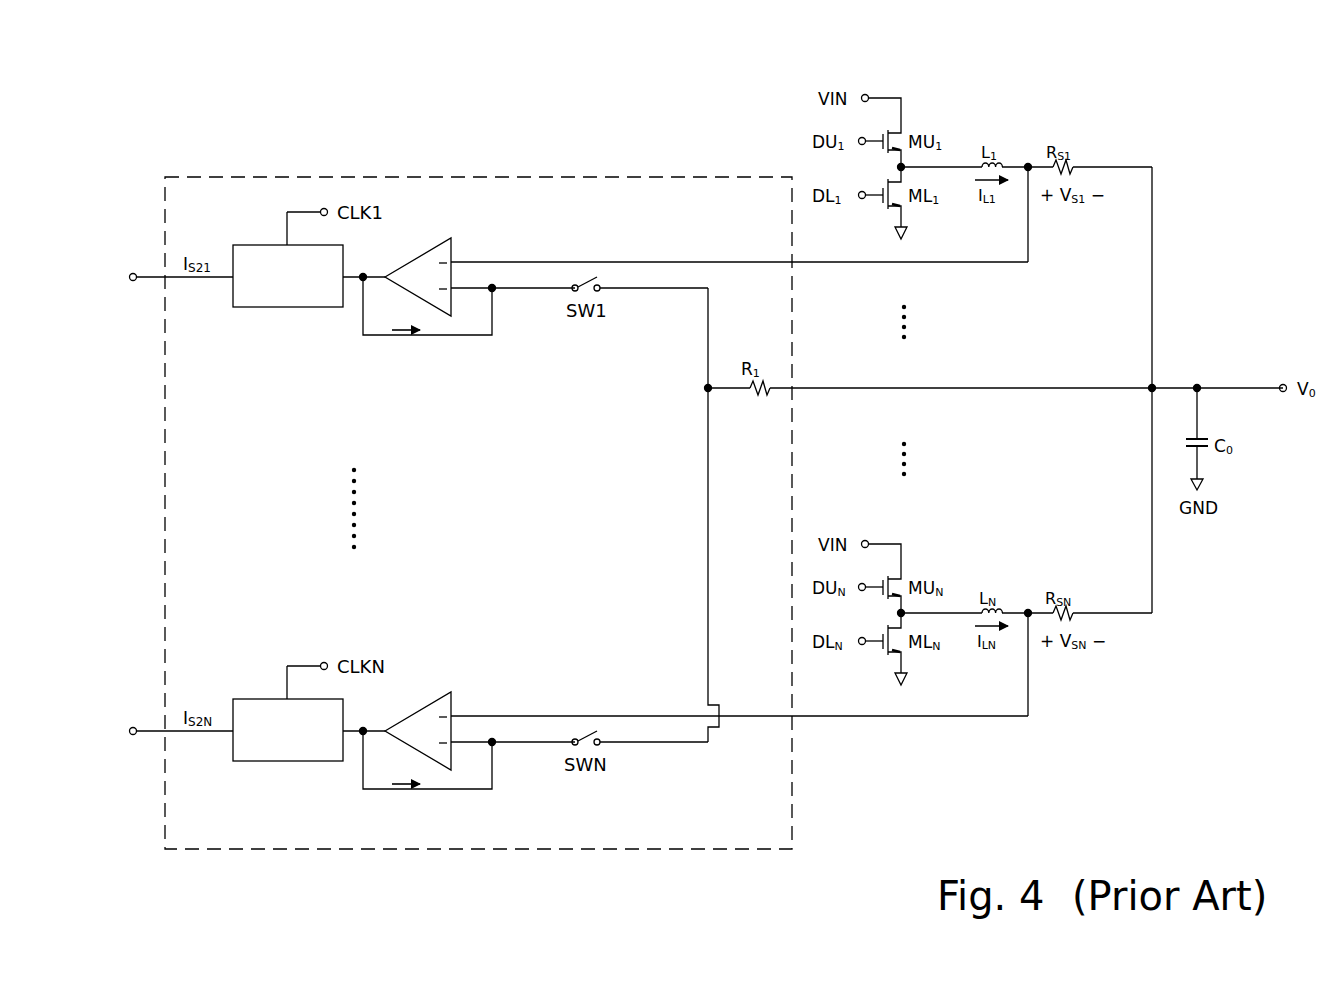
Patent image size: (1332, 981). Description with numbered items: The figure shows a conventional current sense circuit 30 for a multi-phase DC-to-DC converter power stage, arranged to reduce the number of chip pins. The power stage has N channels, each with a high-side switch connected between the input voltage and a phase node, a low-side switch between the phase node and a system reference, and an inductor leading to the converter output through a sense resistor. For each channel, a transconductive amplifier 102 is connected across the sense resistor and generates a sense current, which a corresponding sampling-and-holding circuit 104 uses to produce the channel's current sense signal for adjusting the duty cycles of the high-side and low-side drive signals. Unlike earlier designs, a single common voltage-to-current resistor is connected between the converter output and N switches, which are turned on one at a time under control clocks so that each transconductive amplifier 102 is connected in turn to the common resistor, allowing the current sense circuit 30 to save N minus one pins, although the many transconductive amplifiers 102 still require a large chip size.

The current sense circuit 30 is at (537, 176).
The transconductive amplifier 102 is at (419, 250).
The sampling-and-holding circuit 104 is at (300, 308).